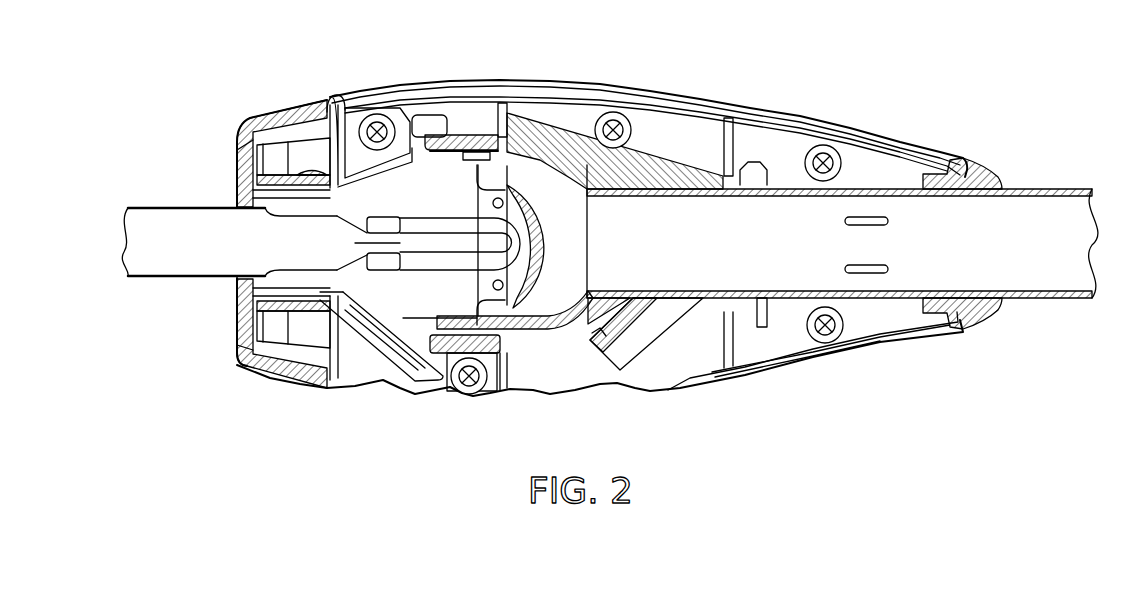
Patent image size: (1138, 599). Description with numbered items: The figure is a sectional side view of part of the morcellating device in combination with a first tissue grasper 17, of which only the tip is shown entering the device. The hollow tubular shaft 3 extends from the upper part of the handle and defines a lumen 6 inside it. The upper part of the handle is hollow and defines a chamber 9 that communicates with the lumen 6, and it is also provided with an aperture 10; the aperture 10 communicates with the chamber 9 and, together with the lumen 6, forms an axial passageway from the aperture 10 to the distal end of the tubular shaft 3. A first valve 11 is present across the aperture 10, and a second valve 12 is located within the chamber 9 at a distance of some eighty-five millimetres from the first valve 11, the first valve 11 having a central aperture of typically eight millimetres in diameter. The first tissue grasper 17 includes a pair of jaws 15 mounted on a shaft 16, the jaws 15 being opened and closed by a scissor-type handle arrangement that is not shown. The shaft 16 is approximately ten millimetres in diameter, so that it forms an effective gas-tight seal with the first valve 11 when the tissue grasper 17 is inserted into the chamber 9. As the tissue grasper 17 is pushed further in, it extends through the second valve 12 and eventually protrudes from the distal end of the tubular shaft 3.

The tubular shaft 3 is at (1038, 188).
The lumen 6 is at (1027, 262).
The chamber 9 is at (383, 193).
The aperture 10 is at (224, 298).
The first valve 11 is at (233, 345).
The second valve 12 is at (521, 186).
The jaws 15 is at (453, 222).
The shaft 16 is at (192, 222).
The first tissue grasper 17 is at (147, 299).